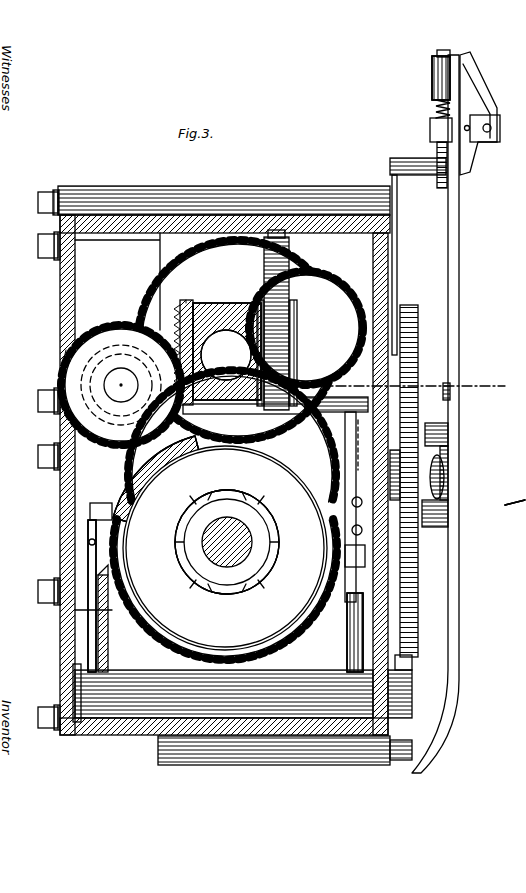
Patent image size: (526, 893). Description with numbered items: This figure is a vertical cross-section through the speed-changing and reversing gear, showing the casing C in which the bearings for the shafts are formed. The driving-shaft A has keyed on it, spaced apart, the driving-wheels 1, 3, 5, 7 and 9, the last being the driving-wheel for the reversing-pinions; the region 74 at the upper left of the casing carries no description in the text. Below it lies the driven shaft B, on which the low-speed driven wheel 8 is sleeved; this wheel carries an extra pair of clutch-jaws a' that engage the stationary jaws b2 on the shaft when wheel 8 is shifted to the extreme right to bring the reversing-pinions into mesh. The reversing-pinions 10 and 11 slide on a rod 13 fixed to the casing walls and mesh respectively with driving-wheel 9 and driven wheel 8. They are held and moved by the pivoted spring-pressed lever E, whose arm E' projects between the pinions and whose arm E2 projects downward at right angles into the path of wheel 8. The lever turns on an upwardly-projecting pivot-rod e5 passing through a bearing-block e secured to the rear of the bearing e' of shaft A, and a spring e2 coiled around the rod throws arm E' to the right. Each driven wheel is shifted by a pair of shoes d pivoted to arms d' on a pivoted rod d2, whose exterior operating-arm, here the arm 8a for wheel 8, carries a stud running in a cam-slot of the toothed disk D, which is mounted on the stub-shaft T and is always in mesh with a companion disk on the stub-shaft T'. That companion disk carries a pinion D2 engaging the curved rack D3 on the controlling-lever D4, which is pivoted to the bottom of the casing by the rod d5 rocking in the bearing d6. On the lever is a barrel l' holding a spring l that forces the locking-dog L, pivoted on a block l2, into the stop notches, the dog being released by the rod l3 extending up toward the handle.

The casing C is at (60, 313).
The compartment 74 is at (130, 303).
The pivot-rod e5 is at (302, 247).
The driving-wheel 1 is at (306, 328).
The driving-wheel 3 is at (360, 309).
The driving-wheel 5 is at (332, 352).
The rod 13 is at (120, 386).
The reversing-pinion 11 is at (60, 363).
The reversing-pinion 10 is at (58, 382).
The driving-wheel 9 is at (180, 318).
The driving-wheel 7 is at (174, 290).
The bearing e' is at (227, 351).
The driving-shaft A is at (226, 355).
The spring e2 is at (264, 284).
The bearing-block e is at (344, 384).
The lever E is at (232, 436).
The arm E' is at (156, 479).
The driven shaft B is at (222, 552).
The driven wheel 8 is at (225, 589).
The clutch-jaws a' is at (227, 540).
The clutch-jaws b2 is at (265, 563).
The arm E2 is at (352, 470).
The shoes d is at (101, 576).
The arms d' is at (220, 596).
The pivoted rod d2 is at (152, 672).
The bearing d6 is at (320, 754).
The rod d5 is at (402, 755).
The operating-arm 8a is at (400, 662).
The locking-dog L is at (430, 128).
The barrel l' is at (430, 75).
The spring l is at (431, 107).
The rod l3 is at (490, 102).
The block l2 is at (470, 150).
The controlling-lever D4 is at (460, 535).
The disk D is at (418, 566).
The curved rack D3 is at (448, 433).
The pinion D2 is at (448, 508).
The stub-shaft T is at (468, 471).
The stub-shaft T' is at (515, 510).